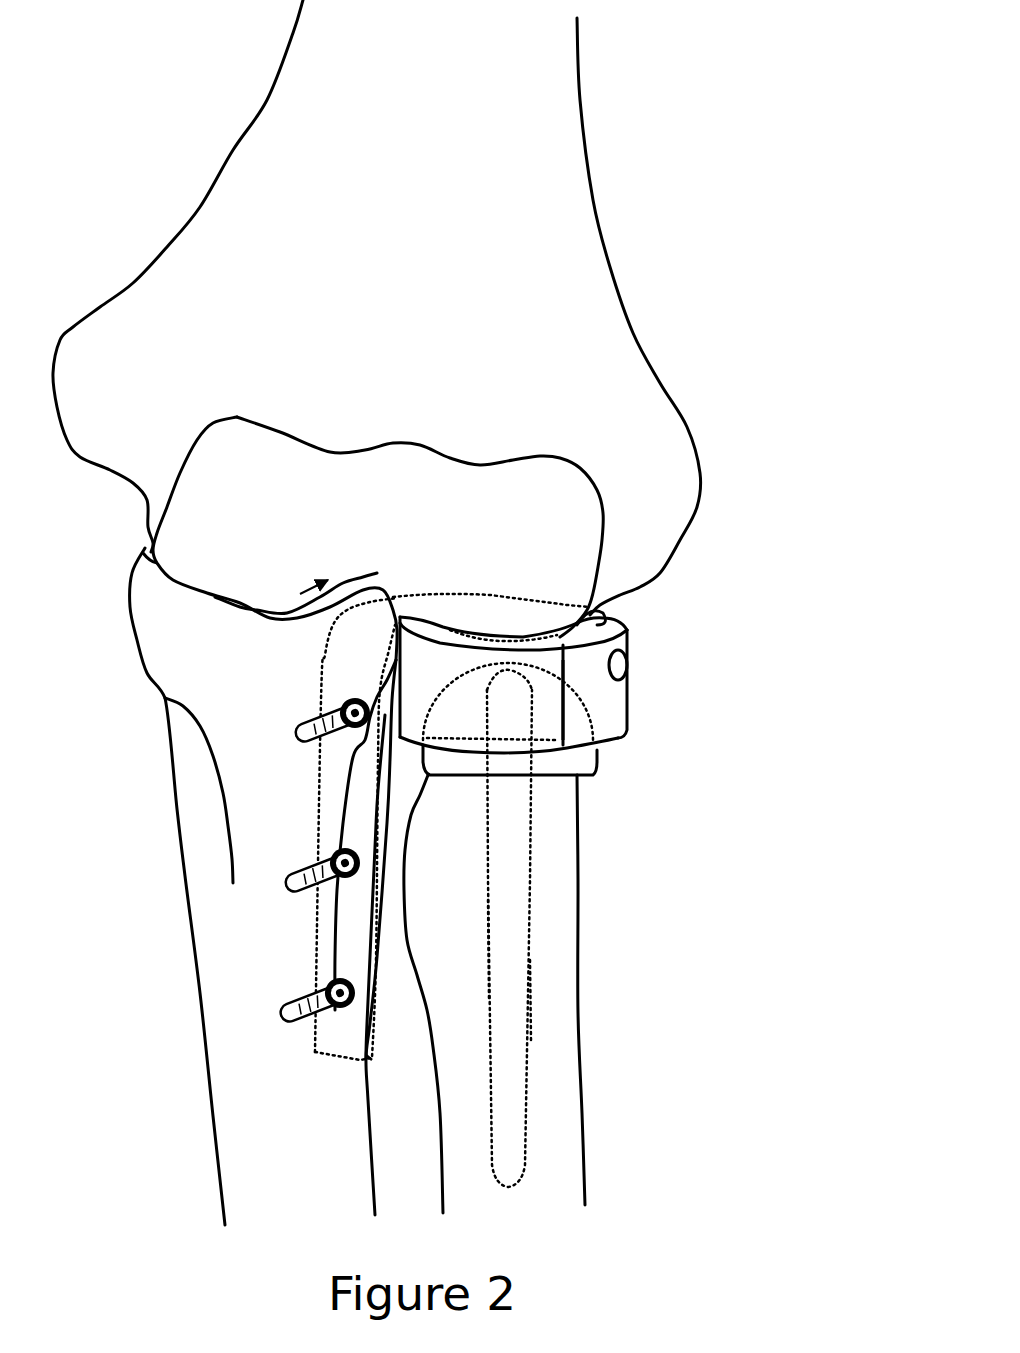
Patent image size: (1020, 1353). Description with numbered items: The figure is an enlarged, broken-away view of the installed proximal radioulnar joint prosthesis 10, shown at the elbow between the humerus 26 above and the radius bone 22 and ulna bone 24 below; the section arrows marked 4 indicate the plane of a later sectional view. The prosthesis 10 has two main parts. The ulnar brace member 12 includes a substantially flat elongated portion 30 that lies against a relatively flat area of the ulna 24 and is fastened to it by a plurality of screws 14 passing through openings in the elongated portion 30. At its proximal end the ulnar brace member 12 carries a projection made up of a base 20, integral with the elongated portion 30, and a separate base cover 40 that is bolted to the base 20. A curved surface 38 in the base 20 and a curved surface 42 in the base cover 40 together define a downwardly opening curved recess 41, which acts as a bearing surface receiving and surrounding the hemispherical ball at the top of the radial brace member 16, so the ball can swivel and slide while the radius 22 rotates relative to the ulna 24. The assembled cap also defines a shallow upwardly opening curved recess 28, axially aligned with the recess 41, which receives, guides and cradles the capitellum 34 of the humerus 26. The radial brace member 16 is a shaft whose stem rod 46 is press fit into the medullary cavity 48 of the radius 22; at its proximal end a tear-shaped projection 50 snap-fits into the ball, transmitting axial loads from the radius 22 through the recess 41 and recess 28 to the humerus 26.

The proximal radioulnar joint prosthesis 10 is at (740, 609).
The ulnar brace member 12 is at (302, 793).
The screws 14 is at (280, 893).
The radial brace member 16 is at (548, 880).
The base 20 is at (420, 665).
The radius bone 22 is at (583, 1137).
The ulna bone 24 is at (213, 1116).
The humerus 26 is at (597, 200).
The upwardly opening curved recess 28 is at (603, 607).
The elongated portion 30 is at (366, 1080).
The capitellum 34 is at (573, 583).
The curved surface 38 is at (430, 690).
The base cover 40 is at (630, 688).
The downwardly opening curved recess 41 is at (505, 672).
The curved surface 42 is at (575, 728).
The stem rod 46 is at (510, 952).
The medullary cavity 48 is at (518, 1003).
The tear-shaped projection 50 is at (600, 760).
The section line 4 is at (132, 555).